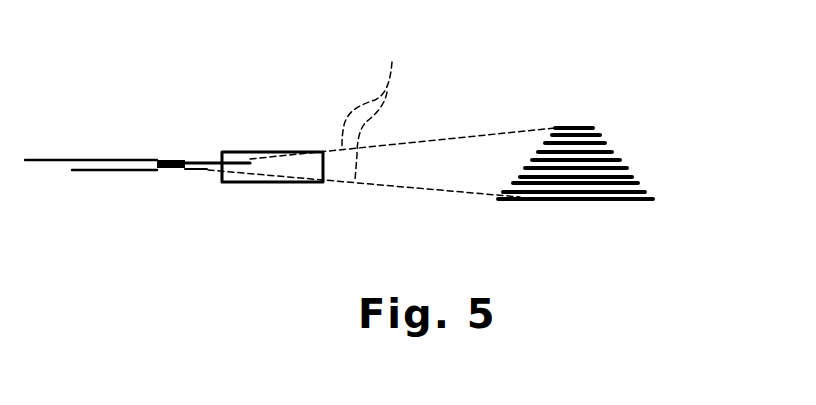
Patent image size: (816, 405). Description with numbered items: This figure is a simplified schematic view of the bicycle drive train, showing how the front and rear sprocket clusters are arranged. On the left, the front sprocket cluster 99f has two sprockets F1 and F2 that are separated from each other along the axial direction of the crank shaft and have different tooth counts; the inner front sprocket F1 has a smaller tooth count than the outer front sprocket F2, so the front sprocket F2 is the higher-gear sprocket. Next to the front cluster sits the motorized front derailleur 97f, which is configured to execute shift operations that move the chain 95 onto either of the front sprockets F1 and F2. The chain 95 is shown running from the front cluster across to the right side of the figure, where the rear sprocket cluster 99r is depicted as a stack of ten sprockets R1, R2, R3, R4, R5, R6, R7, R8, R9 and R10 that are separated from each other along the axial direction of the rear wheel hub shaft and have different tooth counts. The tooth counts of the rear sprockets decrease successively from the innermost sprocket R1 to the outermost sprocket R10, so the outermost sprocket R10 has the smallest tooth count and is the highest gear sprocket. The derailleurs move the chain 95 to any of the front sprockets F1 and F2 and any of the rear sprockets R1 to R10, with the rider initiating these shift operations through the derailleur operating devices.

The inner front sprocket F1 is at (102, 172).
The outer front sprocket F2 is at (97, 160).
The front sprocket cluster 99f is at (188, 122).
The motorized front derailleur 97f is at (275, 151).
The chain 95 is at (381, 116).
The rear sprocket cluster 99r is at (577, 84).
The innermost rear sprocket R1 is at (498, 200).
The rear sprocket R2 is at (503, 192).
The rear sprocket R3 is at (513, 183).
The rear sprocket R4 is at (520, 177).
The rear sprocket R5 is at (525, 168).
The rear sprocket R6 is at (620, 160).
The rear sprocket R7 is at (612, 152).
The rear sprocket R8 is at (605, 143).
The rear sprocket R9 is at (600, 135).
The outermost rear sprocket R10 is at (593, 128).